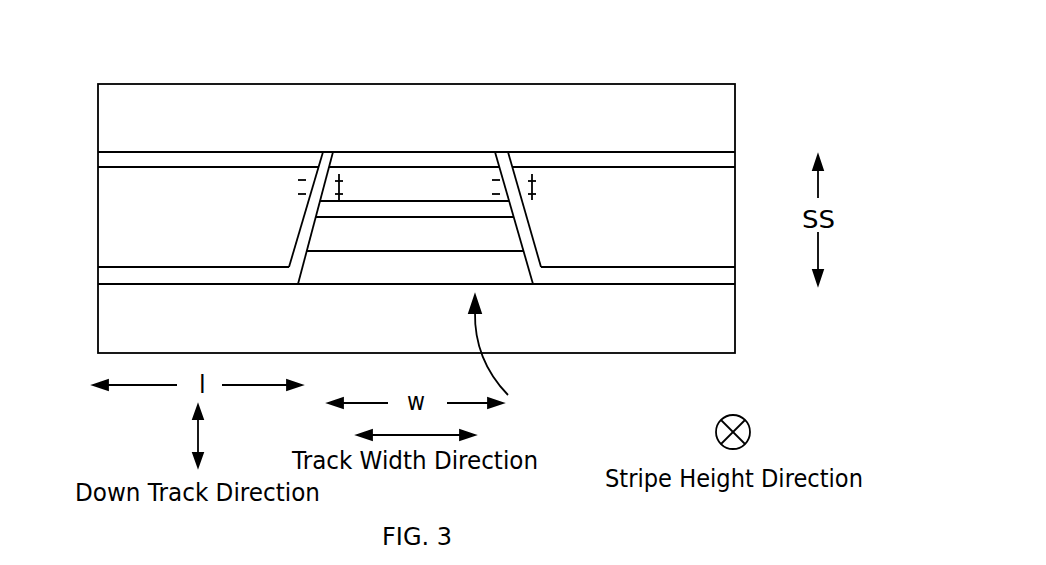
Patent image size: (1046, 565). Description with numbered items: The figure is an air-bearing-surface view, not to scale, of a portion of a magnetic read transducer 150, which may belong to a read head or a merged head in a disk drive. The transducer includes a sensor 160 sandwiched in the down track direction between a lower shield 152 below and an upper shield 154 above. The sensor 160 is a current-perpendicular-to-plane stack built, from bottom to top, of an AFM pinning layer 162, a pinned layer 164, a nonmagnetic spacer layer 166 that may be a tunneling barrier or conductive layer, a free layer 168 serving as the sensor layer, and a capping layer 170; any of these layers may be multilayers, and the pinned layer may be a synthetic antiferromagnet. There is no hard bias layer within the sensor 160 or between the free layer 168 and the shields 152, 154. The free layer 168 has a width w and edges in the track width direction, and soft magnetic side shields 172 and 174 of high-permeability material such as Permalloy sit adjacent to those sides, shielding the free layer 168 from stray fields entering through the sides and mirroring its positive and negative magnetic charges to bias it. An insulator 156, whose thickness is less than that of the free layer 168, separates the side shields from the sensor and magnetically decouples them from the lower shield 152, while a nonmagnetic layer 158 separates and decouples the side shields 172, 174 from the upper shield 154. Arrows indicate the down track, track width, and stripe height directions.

The magnetic read transducer 150 is at (439, 28).
The shield 1 152 is at (737, 328).
The shield 2 154 is at (737, 90).
The insulator 156 is at (110, 287).
The nonmagnetic layer 158 is at (97, 160).
The sensor 160 is at (515, 352).
The AFM pinning layer 162 is at (315, 287).
The pinned layer 164 is at (502, 251).
The nonmagnetic spacer layer 166 is at (523, 212).
The free layer 168 is at (348, 152).
The capping layer 170 is at (465, 150).
The soft magnetic side shield 172 is at (737, 252).
The soft magnetic side shield 174 is at (97, 235).